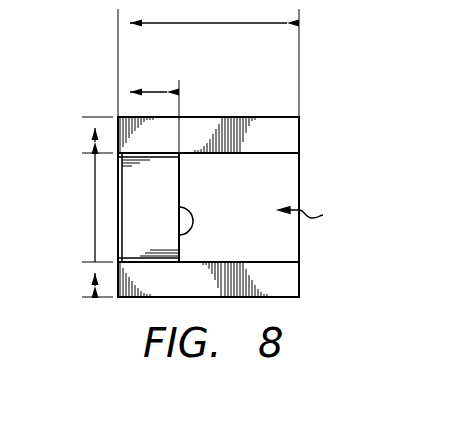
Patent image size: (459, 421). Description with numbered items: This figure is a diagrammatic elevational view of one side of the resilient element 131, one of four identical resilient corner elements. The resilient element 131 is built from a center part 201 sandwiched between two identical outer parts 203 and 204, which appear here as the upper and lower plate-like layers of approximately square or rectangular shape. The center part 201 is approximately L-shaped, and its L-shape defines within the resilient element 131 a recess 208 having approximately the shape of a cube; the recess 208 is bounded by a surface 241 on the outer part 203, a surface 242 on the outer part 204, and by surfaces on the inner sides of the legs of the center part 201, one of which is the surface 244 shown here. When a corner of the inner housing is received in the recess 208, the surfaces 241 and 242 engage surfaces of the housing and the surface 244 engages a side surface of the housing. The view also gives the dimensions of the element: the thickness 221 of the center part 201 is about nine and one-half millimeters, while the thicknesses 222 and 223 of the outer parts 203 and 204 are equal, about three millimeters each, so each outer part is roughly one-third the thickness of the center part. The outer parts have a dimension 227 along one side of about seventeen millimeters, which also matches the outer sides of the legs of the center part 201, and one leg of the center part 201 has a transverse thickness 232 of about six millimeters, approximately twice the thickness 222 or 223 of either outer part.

The resilient element 131 is at (325, 83).
The outer part 203 is at (292, 135).
The outer part 204 is at (292, 280).
The surface 241 is at (283, 154).
The surface 242 is at (282, 262).
The center part 201 is at (292, 191).
The recess 208 is at (320, 216).
The surface 244 is at (176, 213).
The dimension 227 is at (208, 24).
The transverse thickness 232 is at (150, 91).
The thickness 222 is at (92, 133).
The thickness 221 is at (94, 208).
The thickness 223 is at (93, 281).